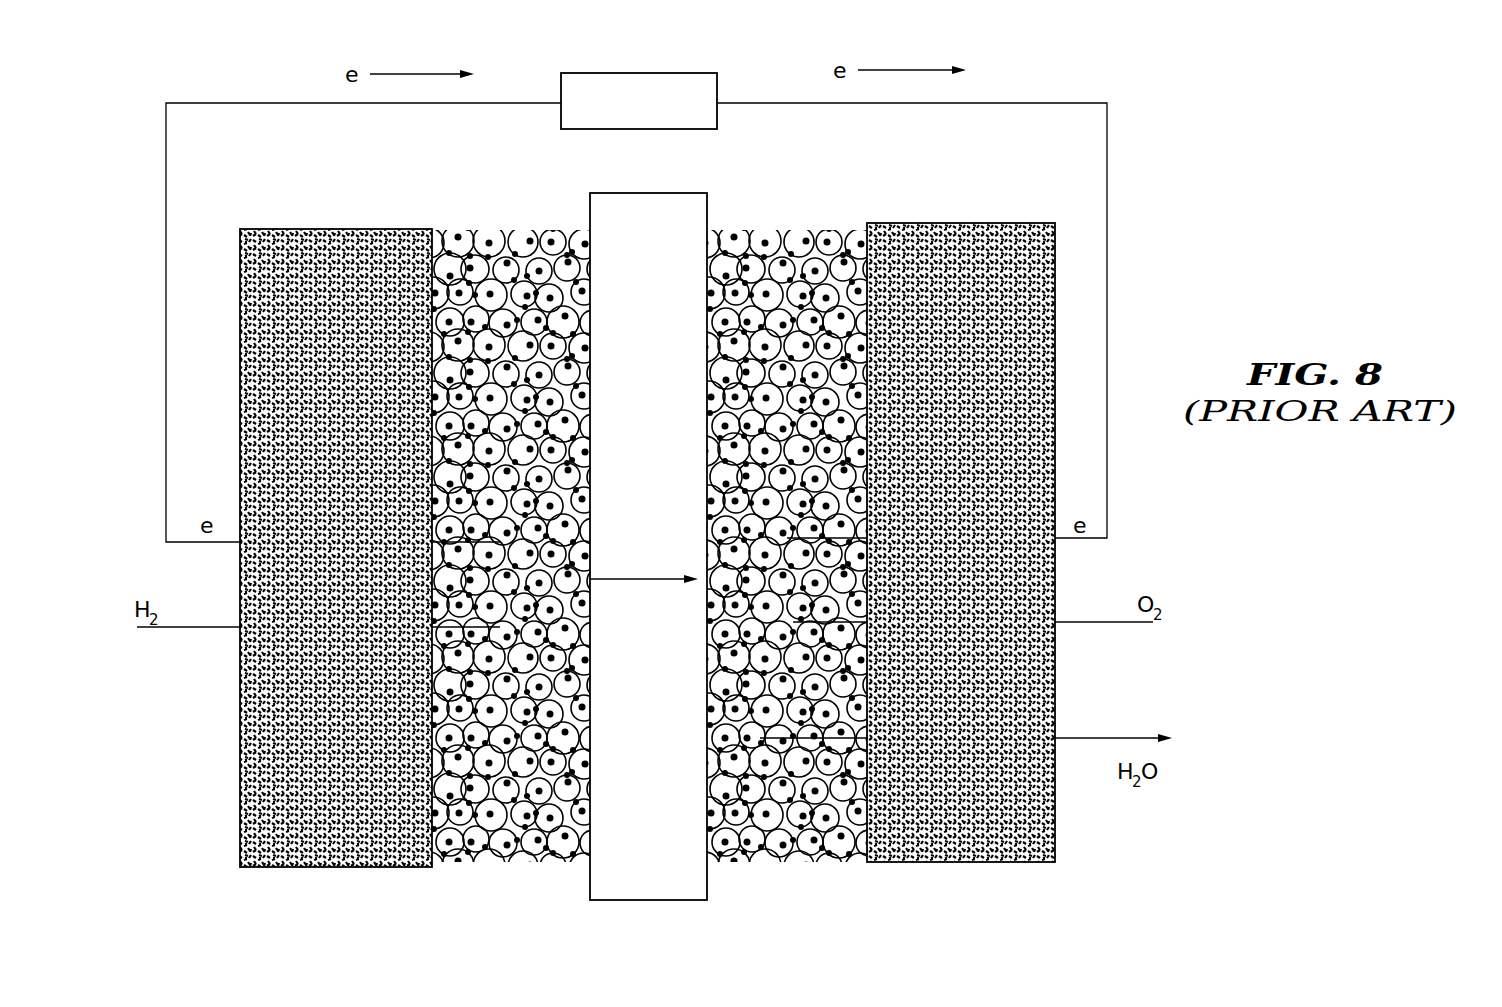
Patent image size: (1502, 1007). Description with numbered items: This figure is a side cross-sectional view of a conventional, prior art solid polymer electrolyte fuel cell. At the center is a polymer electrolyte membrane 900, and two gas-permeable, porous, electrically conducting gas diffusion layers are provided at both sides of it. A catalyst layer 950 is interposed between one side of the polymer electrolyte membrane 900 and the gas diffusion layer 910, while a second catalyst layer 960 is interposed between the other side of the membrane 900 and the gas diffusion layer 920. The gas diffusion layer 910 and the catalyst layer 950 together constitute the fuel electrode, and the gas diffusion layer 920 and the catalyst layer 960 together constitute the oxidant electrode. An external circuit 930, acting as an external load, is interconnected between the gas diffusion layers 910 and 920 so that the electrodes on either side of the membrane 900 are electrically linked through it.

The polymer electrolyte membrane 900 is at (685, 193).
The gas diffusion layer 910 is at (282, 216).
The gas diffusion layer 920 is at (1016, 211).
The external circuit 930 is at (695, 73).
The catalyst layer 950 is at (512, 216).
The catalyst layer 960 is at (789, 211).